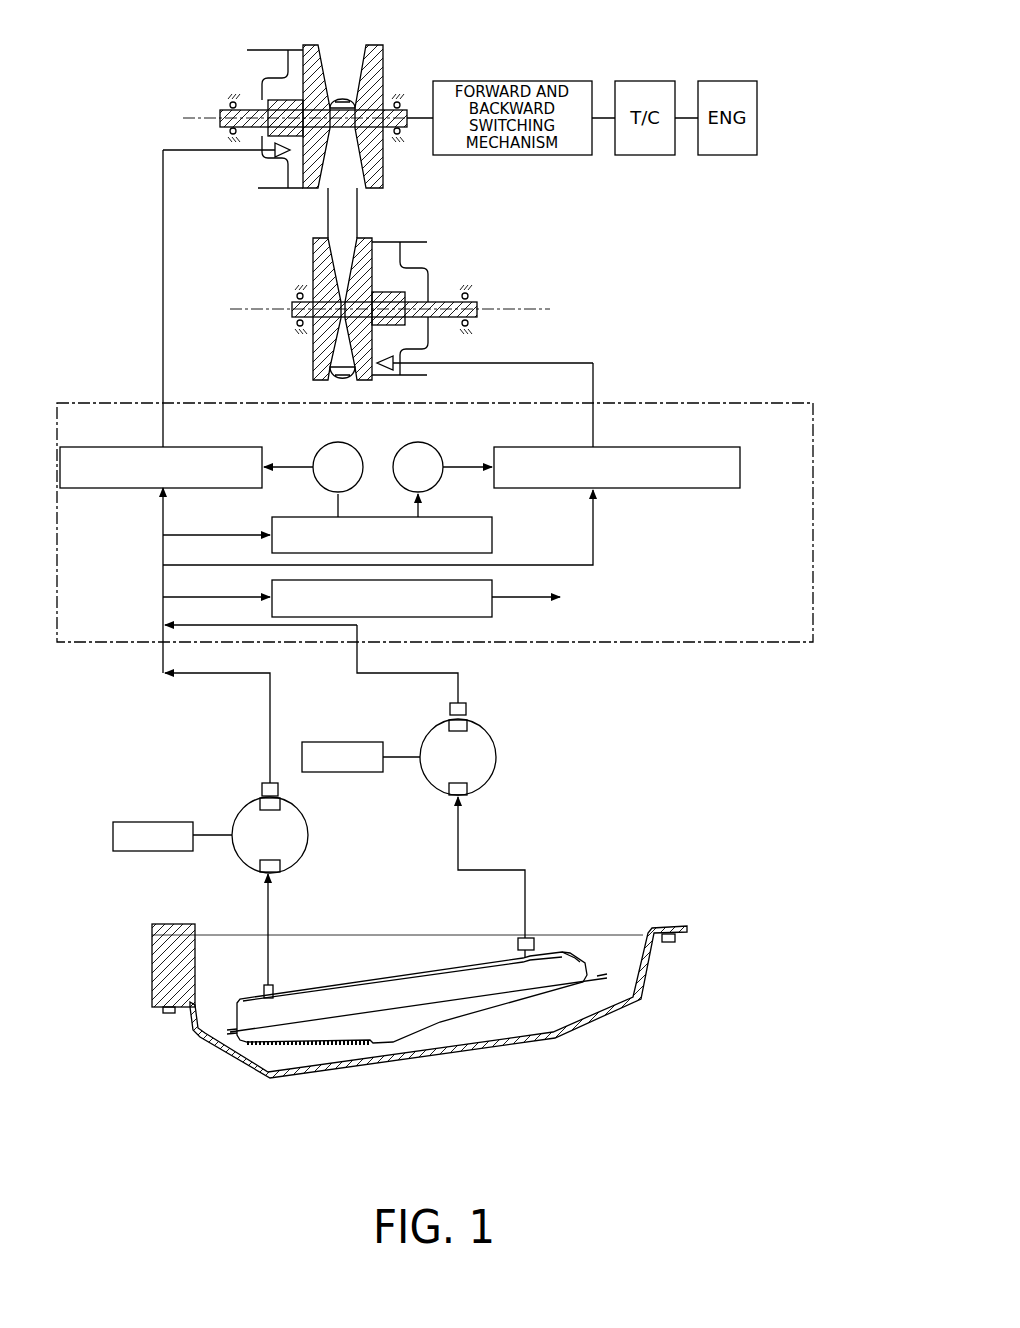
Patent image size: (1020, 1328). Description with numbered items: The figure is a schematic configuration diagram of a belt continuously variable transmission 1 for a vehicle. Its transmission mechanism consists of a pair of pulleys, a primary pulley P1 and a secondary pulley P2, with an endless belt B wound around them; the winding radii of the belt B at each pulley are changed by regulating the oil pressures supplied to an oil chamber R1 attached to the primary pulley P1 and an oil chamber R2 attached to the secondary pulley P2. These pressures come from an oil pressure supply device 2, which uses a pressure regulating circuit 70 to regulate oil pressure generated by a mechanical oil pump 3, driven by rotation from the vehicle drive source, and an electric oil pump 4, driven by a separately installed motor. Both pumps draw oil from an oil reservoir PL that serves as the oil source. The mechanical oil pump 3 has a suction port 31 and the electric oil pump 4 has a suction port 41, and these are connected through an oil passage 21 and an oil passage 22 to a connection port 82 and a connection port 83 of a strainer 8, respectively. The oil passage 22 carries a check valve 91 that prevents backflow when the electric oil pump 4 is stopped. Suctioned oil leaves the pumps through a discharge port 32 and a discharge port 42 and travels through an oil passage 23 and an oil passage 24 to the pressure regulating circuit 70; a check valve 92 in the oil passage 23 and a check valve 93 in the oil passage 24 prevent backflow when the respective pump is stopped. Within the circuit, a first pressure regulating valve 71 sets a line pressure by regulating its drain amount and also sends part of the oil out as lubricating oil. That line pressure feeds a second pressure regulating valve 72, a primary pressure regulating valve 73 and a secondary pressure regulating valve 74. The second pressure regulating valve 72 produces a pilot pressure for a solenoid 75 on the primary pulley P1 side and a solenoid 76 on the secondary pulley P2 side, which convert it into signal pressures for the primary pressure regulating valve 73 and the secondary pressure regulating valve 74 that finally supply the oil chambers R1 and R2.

The belt continuously variable transmission 1 is at (147, 123).
The oil pressure supply device 2 is at (187, 720).
The mechanical oil pump 3 is at (237, 838).
The electric oil pump 4 is at (425, 763).
The strainer 8 is at (407, 1021).
The oil passage 21 is at (268, 912).
The oil passage 22 is at (477, 868).
The oil passage 23 is at (270, 700).
The oil passage 24 is at (440, 673).
The suction port 31 is at (262, 872).
The discharge port 32 is at (262, 808).
The suction port 41 is at (449, 795).
The discharge port 42 is at (452, 737).
The pressure regulating circuit 70 is at (640, 403).
The first pressure regulating valve 71 is at (495, 584).
The second pressure regulating valve 72 is at (495, 521).
The primary pressure regulating valve 73 is at (78, 447).
The secondary pressure regulating valve 74 is at (680, 447).
The solenoid 75 is at (322, 448).
The solenoid 76 is at (403, 448).
The connection port 82 is at (264, 990).
The connection port 83 is at (545, 958).
The check valve 91 is at (518, 944).
The check valve 92 is at (262, 789).
The check valve 93 is at (450, 709).
The primary pulley P1 is at (296, 42).
The secondary pulley P2 is at (310, 351).
The oil chamber R1 is at (270, 88).
The oil chamber R2 is at (387, 273).
The endless belt B is at (358, 200).
The oil reservoir PL is at (312, 935).